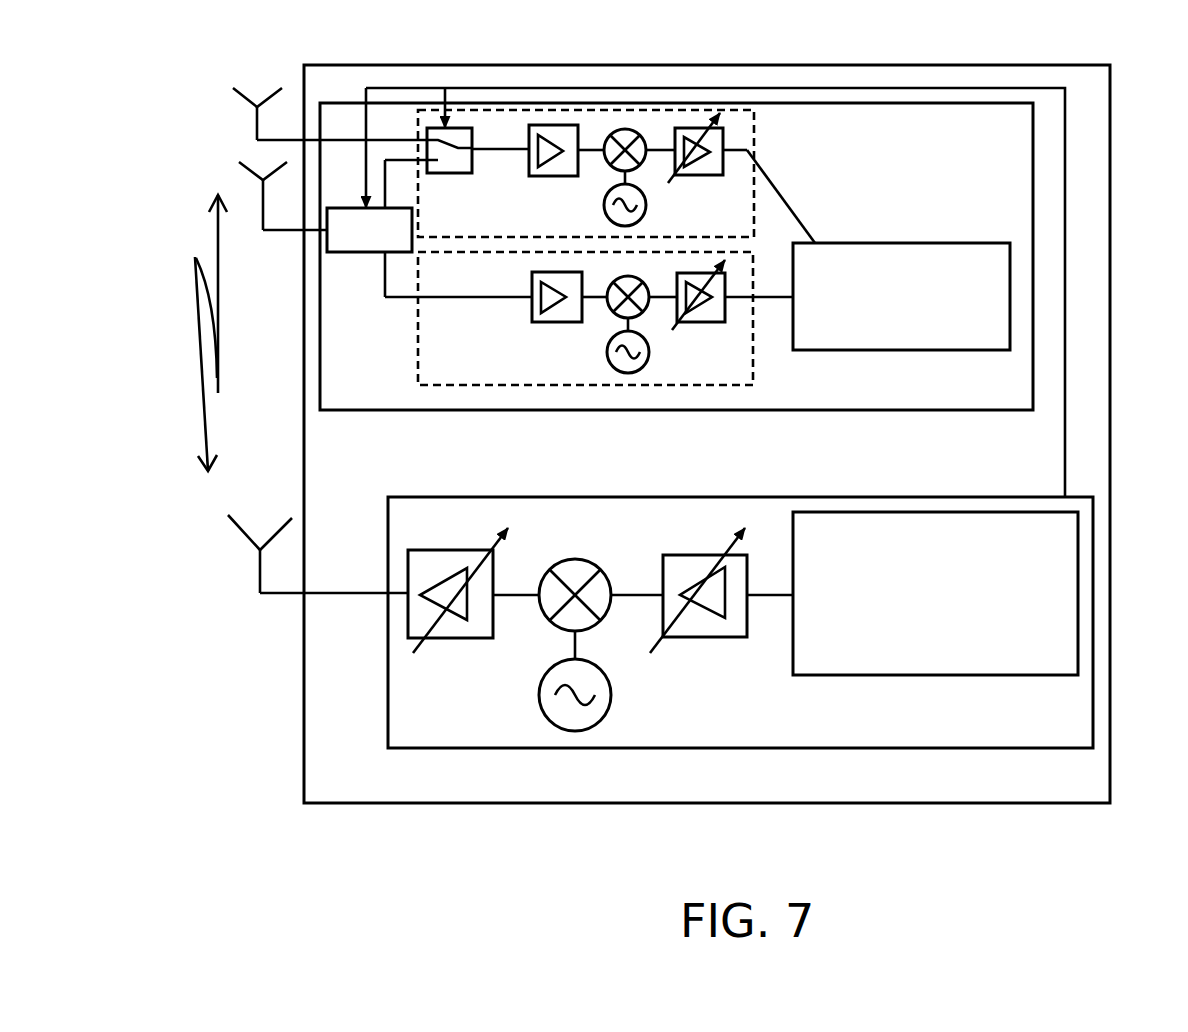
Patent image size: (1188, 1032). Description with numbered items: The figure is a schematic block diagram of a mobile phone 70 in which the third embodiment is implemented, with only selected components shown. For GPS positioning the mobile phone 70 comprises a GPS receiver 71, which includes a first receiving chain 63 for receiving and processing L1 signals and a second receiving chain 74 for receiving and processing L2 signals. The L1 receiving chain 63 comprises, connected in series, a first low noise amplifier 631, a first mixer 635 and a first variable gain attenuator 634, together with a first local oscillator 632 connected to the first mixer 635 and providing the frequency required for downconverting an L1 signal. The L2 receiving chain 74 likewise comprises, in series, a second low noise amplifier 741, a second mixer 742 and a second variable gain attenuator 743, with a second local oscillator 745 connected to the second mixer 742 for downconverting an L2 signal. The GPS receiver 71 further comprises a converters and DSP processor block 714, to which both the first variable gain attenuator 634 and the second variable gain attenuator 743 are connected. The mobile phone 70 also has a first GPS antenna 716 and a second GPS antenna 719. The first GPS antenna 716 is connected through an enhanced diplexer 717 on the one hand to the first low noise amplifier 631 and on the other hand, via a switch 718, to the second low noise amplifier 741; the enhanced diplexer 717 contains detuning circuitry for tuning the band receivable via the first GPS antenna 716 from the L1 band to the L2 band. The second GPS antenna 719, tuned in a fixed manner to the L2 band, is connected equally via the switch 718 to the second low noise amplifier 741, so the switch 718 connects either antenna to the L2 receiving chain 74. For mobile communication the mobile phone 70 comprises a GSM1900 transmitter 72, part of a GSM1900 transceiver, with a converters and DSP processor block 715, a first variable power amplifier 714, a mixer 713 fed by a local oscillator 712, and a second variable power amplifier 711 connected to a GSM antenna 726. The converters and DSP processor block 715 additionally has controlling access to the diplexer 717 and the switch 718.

The mobile phone 70 is at (1093, 412).
The GPS receiver 71 is at (1022, 188).
The GSM1900 transmitter 72 is at (1087, 552).
The second receiving chain 74 is at (740, 127).
The first receiving chain 63 is at (740, 325).
The second GPS antenna 719 is at (242, 102).
The first GPS antenna 716 is at (243, 187).
The enhanced diplexer 717 is at (337, 210).
The switch 718 is at (430, 135).
The second low noise amplifier 741 is at (553, 133).
The second mixer 742 is at (625, 140).
The second local oscillator 745 is at (637, 200).
The second variable gain attenuator 743 is at (693, 130).
The converters and DSP processor block 714 is at (923, 257).
The first low noise amplifier 631 is at (567, 312).
The first mixer 635 is at (643, 313).
The first local oscillator 632 is at (632, 365).
The first variable gain attenuator 634 is at (703, 312).
The GSM antenna 726 is at (230, 515).
The second variable power amplifier 711 is at (447, 625).
The mixer 713 is at (595, 617).
The local oscillator 712 is at (573, 722).
The converters and DSP processor block 715 is at (837, 663).